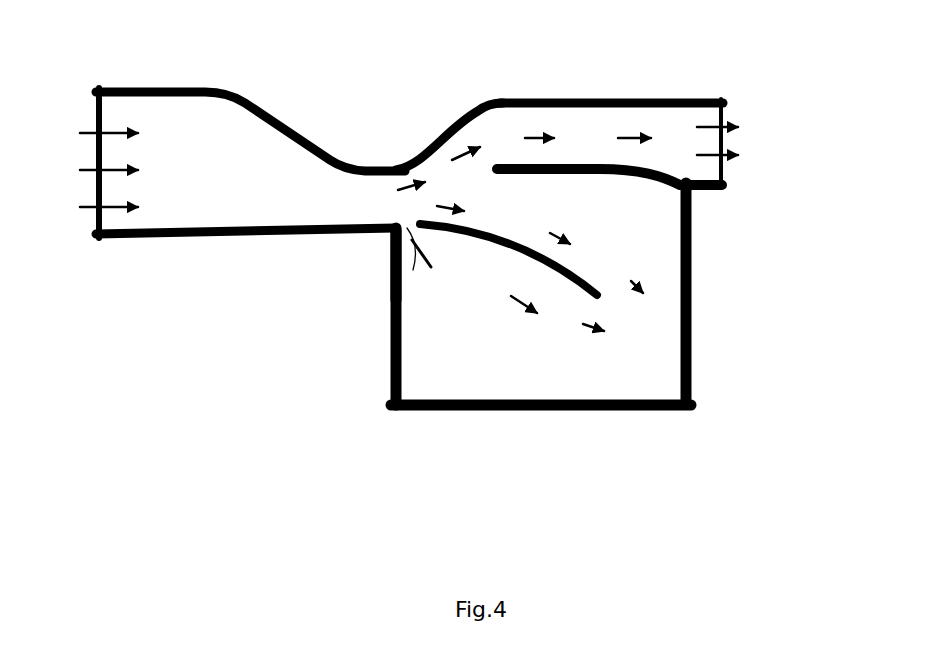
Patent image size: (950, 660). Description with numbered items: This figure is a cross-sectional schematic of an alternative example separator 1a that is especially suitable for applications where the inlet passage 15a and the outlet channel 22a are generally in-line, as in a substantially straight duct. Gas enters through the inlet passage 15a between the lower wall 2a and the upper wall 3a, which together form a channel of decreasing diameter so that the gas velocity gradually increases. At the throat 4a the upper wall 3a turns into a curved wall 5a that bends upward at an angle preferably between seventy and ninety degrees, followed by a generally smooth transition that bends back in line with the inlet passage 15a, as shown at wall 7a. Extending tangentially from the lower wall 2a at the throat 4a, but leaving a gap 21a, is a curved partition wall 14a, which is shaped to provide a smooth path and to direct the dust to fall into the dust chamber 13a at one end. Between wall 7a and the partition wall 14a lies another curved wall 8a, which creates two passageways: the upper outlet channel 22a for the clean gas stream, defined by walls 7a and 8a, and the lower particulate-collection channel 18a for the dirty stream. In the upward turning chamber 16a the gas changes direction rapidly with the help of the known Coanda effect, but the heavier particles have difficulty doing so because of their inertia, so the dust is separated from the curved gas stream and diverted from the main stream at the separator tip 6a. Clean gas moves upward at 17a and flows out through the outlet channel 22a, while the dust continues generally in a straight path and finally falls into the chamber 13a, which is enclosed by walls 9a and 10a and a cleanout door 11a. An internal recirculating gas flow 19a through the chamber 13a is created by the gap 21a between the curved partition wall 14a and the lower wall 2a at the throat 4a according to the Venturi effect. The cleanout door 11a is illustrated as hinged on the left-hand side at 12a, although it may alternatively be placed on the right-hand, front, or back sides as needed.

The alternative example separator 1a is at (419, 245).
The lower wall 2a is at (200, 238).
The upper wall 3a is at (243, 100).
The throat 4a is at (387, 203).
The curved wall 5a is at (390, 160).
The separator tip 6a is at (495, 180).
The wall 7a is at (565, 98).
The curved wall 8a is at (593, 163).
The wall 9a is at (560, 412).
The wall 10a is at (693, 340).
The cleanout door 11a is at (390, 353).
The hinge 12a is at (385, 250).
The dust chamber 13a is at (522, 330).
The curved partition wall 14a is at (517, 253).
The inlet passage 15a is at (97, 154).
The upward turning chamber 16a is at (428, 165).
The upward clean gas flow 17a is at (470, 147).
The particulate-collection channel 18a is at (577, 238).
The internal recirculating gas flow 19a is at (637, 287).
The gap 21a is at (390, 295).
The outlet channel 22a is at (722, 143).